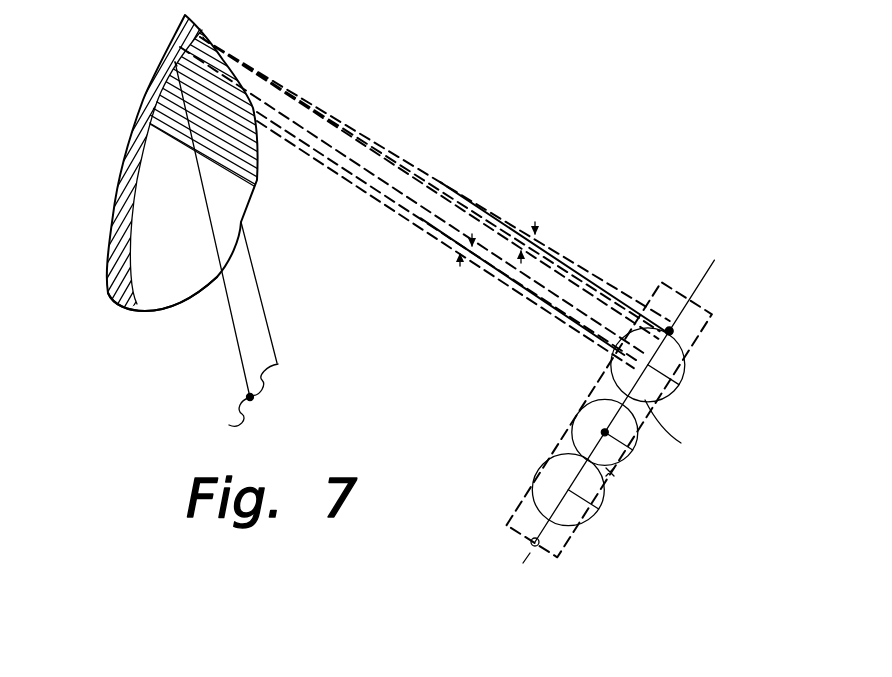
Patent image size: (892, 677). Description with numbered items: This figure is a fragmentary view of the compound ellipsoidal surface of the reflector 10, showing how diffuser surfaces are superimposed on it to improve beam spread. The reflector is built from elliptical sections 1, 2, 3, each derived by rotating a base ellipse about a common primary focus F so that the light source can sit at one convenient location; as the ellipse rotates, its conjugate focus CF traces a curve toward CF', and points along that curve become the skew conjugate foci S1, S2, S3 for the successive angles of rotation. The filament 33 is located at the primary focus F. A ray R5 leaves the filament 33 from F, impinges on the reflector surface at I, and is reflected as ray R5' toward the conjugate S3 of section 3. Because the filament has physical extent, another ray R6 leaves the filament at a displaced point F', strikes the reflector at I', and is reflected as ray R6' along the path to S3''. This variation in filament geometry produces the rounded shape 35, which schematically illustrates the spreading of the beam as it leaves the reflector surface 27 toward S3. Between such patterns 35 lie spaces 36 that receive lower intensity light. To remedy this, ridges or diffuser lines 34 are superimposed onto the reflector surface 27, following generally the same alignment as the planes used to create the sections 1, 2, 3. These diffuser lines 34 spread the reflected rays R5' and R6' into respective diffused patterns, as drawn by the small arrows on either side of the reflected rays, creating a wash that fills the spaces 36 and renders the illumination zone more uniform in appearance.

The reflector 10 is at (124, 128).
The section 1 is at (140, 250).
The section 2 is at (152, 193).
The section 3 is at (157, 97).
The reflector surface 27 is at (167, 248).
The ridges (diffuser lines) 34 is at (248, 163).
The point of impingement I is at (147, 60).
The point of impingement I' is at (228, 26).
The ray R5 is at (212, 227).
The ray R6 is at (274, 292).
The primary focus F is at (265, 413).
The filament point F' is at (286, 365).
The filament 33 is at (227, 423).
The reflected ray R6' is at (435, 188).
The reflected ray R5' is at (411, 207).
The conjugate focus path end CF' is at (649, 401).
The conjugate focus CF is at (520, 569).
The skew conjugate focus S1 is at (592, 512).
The skew conjugate focus S2 is at (633, 450).
The skew conjugate focus S3 is at (665, 379).
The conjugate point S3'' is at (715, 348).
The beam pattern 35 is at (675, 429).
The spaces 36 is at (689, 351).